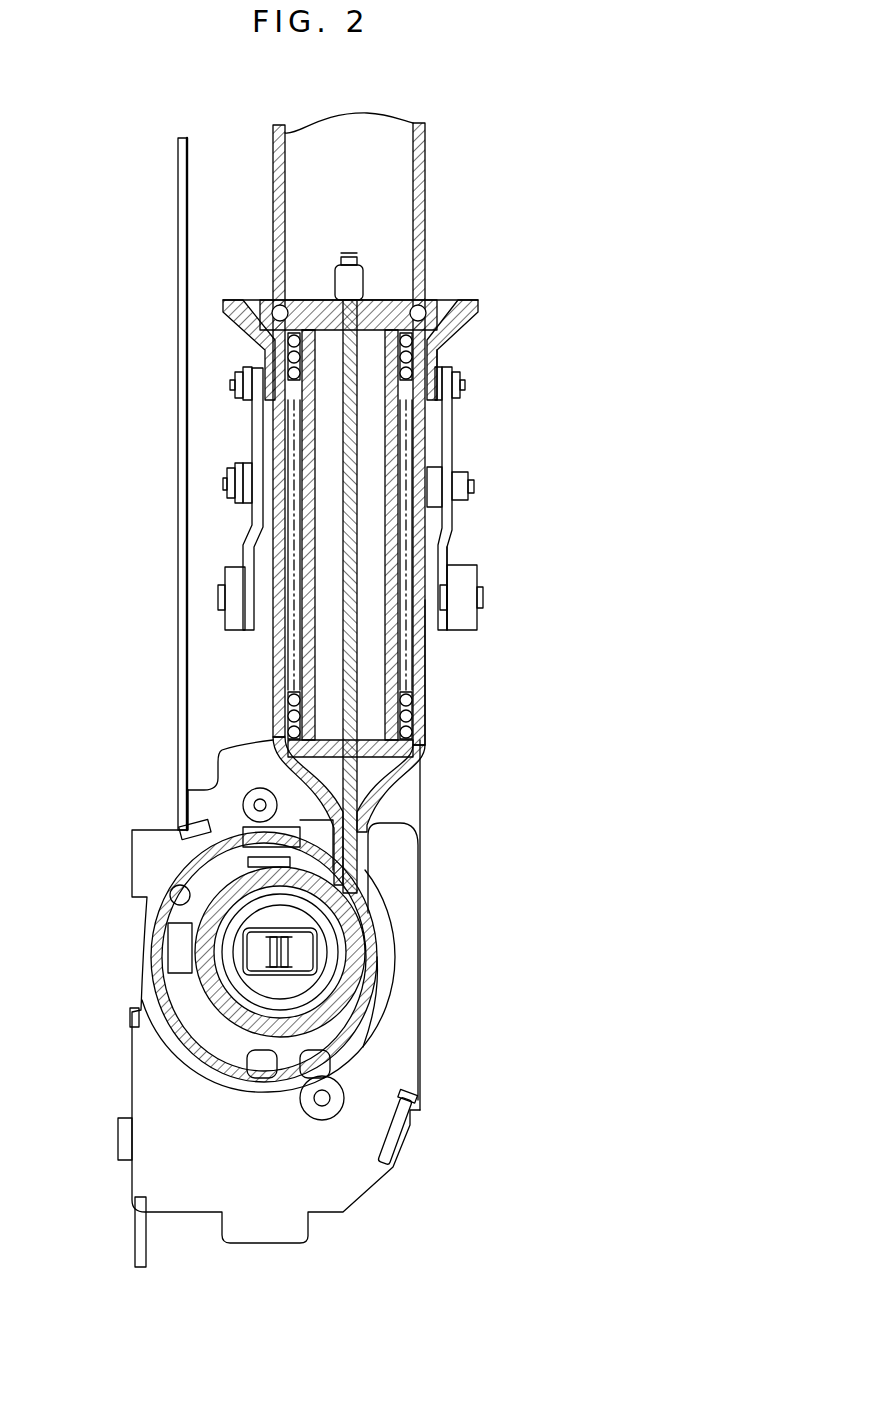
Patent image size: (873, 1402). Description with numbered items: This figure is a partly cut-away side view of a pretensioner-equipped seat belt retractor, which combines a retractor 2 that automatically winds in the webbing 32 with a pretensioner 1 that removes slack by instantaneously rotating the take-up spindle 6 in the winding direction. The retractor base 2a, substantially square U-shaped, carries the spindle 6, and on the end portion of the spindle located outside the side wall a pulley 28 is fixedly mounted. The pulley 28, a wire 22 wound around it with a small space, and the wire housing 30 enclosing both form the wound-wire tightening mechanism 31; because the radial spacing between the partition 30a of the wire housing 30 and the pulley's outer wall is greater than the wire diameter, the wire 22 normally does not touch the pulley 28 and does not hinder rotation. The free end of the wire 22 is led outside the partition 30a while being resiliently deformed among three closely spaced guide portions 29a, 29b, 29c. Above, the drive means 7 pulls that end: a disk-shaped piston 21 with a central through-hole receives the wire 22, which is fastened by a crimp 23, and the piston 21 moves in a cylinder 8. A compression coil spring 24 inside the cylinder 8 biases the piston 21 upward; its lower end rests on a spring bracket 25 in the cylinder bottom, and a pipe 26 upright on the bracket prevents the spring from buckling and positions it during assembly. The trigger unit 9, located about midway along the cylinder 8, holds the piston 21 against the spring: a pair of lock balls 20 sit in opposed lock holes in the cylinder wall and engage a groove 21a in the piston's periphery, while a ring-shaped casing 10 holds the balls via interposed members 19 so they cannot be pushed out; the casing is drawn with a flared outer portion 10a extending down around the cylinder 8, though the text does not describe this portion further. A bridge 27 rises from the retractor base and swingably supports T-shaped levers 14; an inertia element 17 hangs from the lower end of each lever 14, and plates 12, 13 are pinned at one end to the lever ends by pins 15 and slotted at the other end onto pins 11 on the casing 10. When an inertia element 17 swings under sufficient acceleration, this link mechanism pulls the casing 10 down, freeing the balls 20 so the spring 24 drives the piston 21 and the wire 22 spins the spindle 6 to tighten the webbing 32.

The pretensioner 1 is at (450, 846).
The retractor 2 is at (430, 1078).
The retractor base 2a is at (420, 987).
The take-up spindle 6 is at (172, 1020).
The drive means 7 is at (448, 660).
The cylinder 8 is at (427, 700).
The trigger unit 9 is at (240, 346).
The ring-shaped casing 10 is at (476, 301).
The flange skirt 10a is at (452, 336).
The pin 11 is at (465, 386).
The plate 12 is at (455, 450).
The plate 13 is at (262, 418).
The T-shaped lever 14 is at (455, 532).
The pin 15 is at (476, 488).
The inertia element 17 is at (470, 618).
The interposed member 19 is at (444, 288).
The lock ball 20 is at (270, 305).
The piston 21 is at (387, 298).
The groove 21a is at (300, 300).
The wire 22 is at (350, 257).
The crimp 23 is at (363, 278).
The compression coil spring 24 is at (413, 742).
The spring bracket 25 is at (395, 778).
The pipe 26 is at (303, 655).
The bridge 27 is at (258, 508).
The pulley 28 is at (237, 1032).
The guide portion 29a is at (345, 1085).
The guide portion 29b is at (272, 1052).
The guide portion 29c is at (373, 1013).
The wire housing 30 is at (380, 953).
The partition 30a is at (188, 1020).
The wound-wire tightening mechanism 31 is at (400, 912).
The webbing 32 is at (178, 510).